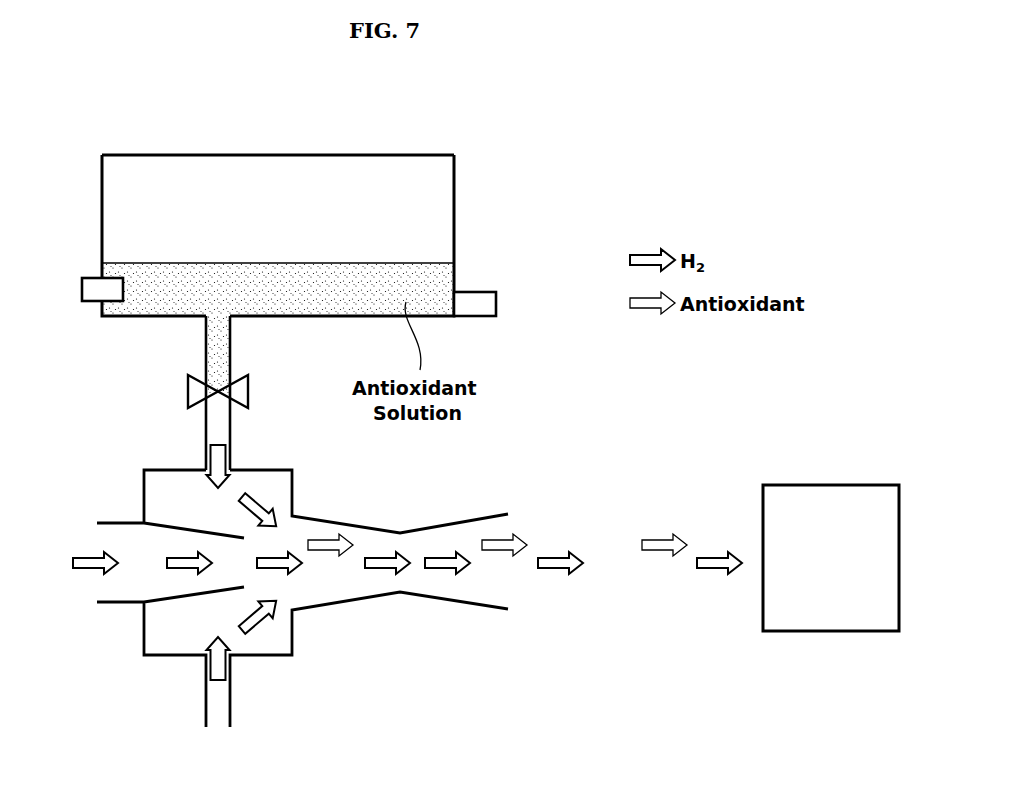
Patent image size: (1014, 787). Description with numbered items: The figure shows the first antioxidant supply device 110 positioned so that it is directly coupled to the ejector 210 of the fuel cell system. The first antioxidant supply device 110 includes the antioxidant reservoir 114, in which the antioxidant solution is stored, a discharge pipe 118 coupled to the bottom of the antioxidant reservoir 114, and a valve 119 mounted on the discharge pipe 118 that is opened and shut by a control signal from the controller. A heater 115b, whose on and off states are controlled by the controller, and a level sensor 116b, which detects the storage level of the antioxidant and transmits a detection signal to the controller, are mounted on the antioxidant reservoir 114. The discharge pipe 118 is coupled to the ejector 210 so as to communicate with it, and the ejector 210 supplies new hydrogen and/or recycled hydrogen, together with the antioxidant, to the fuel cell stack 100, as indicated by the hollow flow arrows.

The first antioxidant supply device 110 is at (333, 144).
The antioxidant reservoir 114 is at (268, 154).
The heater 115b is at (96, 282).
The level sensor 116b is at (475, 302).
The discharge pipe 118 is at (206, 350).
The valve 119 is at (188, 391).
The ejector 210 is at (150, 470).
The fuel cell stack 100 is at (822, 485).